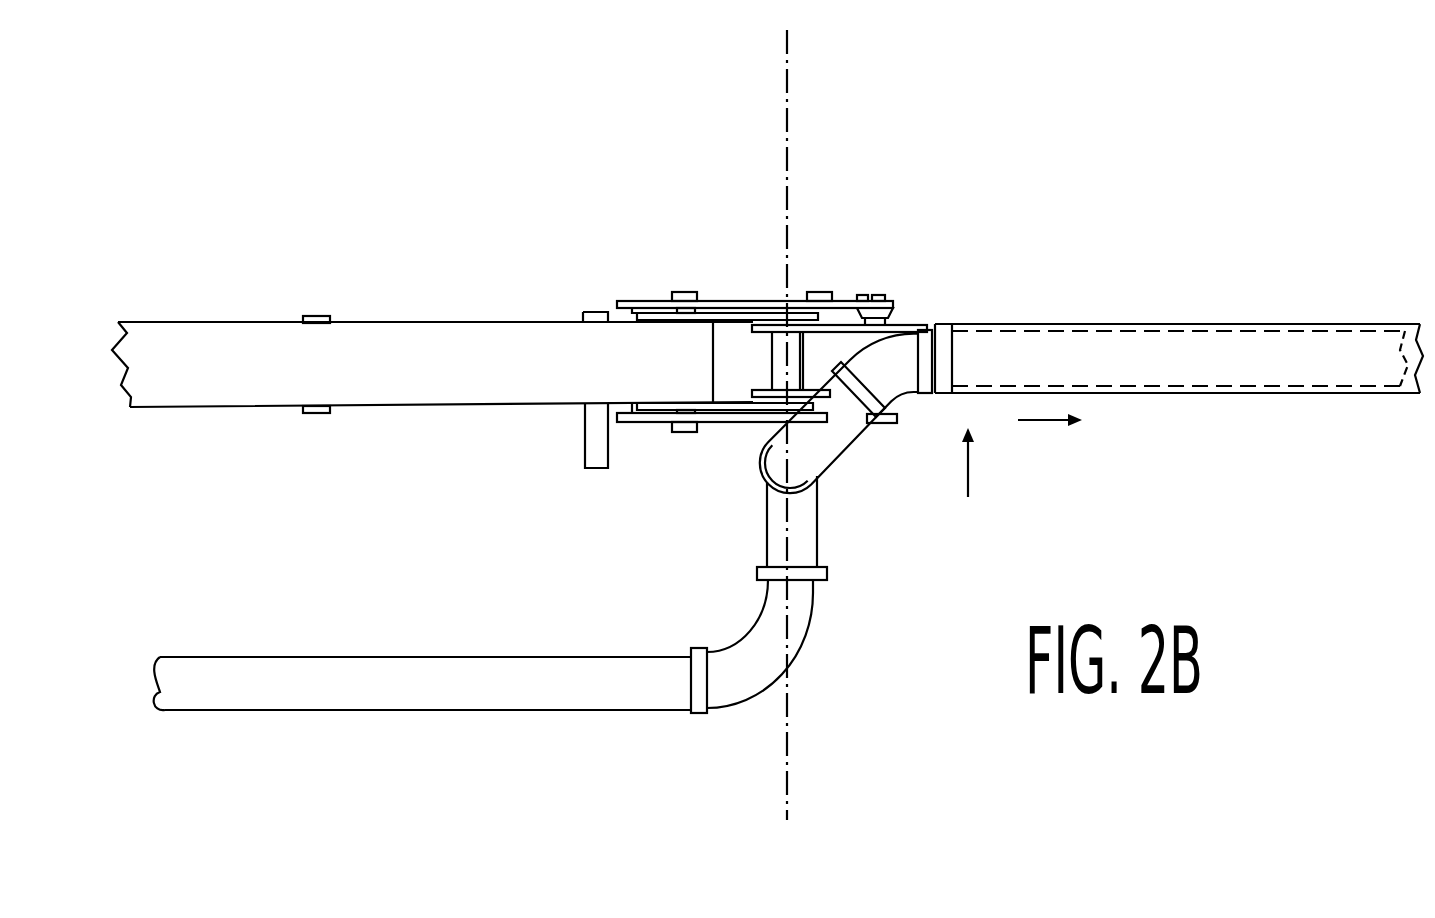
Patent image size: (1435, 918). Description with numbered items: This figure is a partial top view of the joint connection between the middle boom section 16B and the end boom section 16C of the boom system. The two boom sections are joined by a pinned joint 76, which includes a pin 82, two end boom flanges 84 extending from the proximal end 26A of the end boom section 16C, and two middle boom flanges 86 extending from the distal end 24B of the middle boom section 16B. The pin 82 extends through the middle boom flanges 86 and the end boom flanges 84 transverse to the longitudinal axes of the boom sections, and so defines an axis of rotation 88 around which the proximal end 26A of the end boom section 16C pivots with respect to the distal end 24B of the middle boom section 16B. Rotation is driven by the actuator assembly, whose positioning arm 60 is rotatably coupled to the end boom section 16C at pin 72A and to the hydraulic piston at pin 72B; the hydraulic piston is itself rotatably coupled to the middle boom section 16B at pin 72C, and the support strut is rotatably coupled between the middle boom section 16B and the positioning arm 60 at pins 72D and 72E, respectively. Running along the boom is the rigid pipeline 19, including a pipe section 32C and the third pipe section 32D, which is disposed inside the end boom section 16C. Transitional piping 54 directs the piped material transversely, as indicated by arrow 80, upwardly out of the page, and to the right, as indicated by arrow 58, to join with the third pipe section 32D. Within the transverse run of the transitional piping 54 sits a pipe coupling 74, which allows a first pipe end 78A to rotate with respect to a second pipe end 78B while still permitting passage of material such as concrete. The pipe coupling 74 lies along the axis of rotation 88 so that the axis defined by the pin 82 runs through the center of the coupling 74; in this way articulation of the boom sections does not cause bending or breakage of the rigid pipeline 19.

The axis of rotation 88 is at (790, 42).
The middle boom section 16B is at (392, 316).
The distal end of the middle boom section 24B is at (700, 366).
The pin 72C is at (318, 416).
The pin 72D is at (598, 470).
The positioning arm 60 is at (631, 296).
The pin 72B is at (680, 292).
The pin 72E is at (820, 290).
The pin 72A is at (875, 298).
The pinned joint 76 is at (780, 348).
The pin 82 is at (783, 378).
The middle boom flanges 86 is at (731, 322).
The end boom flanges 84 is at (808, 392).
The transitional piping 54 is at (900, 395).
The second pipe end 78B is at (770, 520).
The pipe coupling 74 is at (757, 570).
The first pipe end 78A is at (780, 583).
The pipe section 32C is at (427, 678).
The rigid pipeline 19 is at (563, 712).
The end boom section 16C is at (1096, 320).
The proximal end of the end boom section 26A is at (990, 352).
The third pipe section 32D is at (1231, 352).
The arrow 58 is at (1040, 423).
The arrow 80 is at (970, 472).